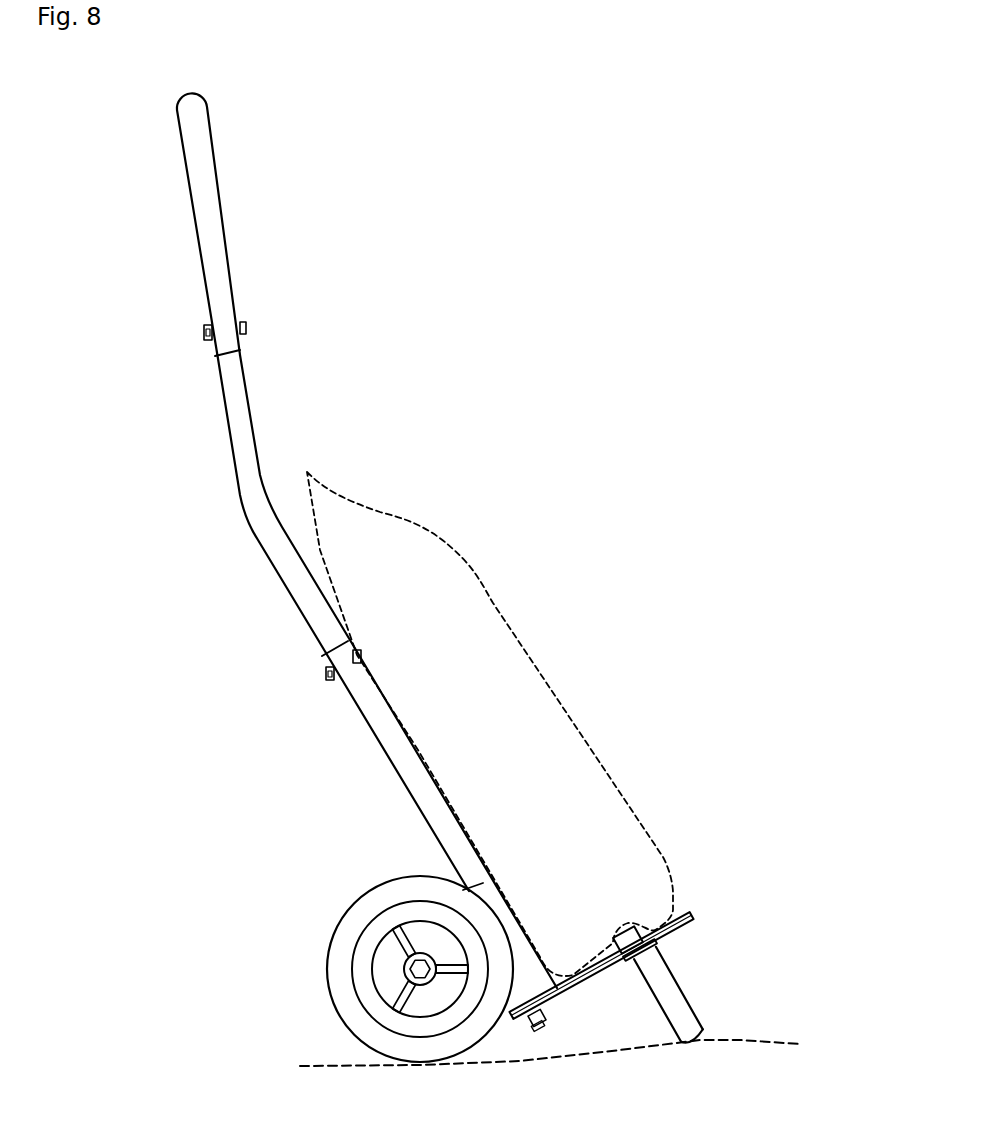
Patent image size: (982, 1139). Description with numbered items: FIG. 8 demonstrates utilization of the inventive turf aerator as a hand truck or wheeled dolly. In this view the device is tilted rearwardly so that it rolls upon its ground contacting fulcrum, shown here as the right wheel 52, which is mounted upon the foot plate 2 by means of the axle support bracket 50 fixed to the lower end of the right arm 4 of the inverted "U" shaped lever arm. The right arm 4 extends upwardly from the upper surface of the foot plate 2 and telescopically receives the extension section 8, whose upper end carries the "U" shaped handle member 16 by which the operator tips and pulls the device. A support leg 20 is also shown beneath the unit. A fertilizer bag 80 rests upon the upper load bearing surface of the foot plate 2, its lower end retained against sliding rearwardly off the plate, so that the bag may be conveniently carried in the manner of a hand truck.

The foot plate 2 is at (685, 915).
The right arm 4 is at (387, 735).
The extension section 8 is at (248, 498).
The handle member 16 is at (205, 210).
The support leg 20 is at (677, 1007).
The axle support bracket 50 is at (470, 880).
The right wheel 52 is at (343, 933).
The fertilizer bag 80 is at (475, 625).